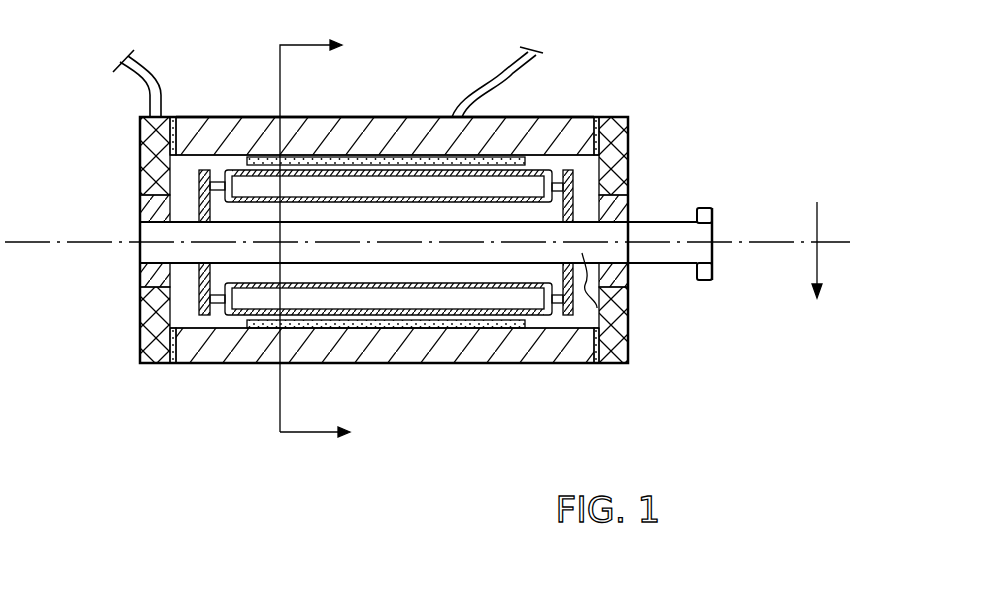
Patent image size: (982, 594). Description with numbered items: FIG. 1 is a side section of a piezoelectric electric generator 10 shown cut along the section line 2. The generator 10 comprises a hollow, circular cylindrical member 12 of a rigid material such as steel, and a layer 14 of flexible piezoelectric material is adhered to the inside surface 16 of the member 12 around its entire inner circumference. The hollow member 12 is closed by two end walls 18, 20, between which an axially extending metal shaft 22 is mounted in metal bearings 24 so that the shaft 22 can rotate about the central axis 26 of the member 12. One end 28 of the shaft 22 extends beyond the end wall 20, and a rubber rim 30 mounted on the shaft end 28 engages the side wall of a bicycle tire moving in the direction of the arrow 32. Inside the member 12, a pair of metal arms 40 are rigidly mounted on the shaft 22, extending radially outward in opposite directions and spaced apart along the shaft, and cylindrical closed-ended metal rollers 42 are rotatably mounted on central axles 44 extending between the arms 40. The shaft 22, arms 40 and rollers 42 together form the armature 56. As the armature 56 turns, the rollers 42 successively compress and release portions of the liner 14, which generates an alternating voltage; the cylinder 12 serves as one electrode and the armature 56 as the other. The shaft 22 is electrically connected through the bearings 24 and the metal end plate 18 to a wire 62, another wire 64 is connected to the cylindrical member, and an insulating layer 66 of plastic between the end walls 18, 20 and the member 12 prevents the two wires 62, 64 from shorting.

The section line 2- 2 is at (324, 238).
The piezoelectric electric generator 10 is at (648, 111).
The hollow circular cylindrical member 12 is at (308, 118).
The layer of flexible piezoelectric material 14 is at (376, 117).
The inside surface 16 is at (238, 162).
The end wall 18 is at (142, 178).
The end wall 20 is at (630, 150).
The shaft 22 is at (677, 248).
The metal bearings 24 is at (145, 208).
The central axis 26 is at (820, 241).
The shaft end 28 is at (715, 230).
The rubber rim 30 is at (706, 210).
The arrow 32 is at (818, 262).
The metal arms 40 is at (567, 168).
The cylindrical rollers 42 is at (512, 117).
The central axle 44 is at (212, 172).
The armature 56 is at (630, 333).
The wire 62 is at (149, 72).
The wire 64 is at (527, 53).
The layer of plastic 66 is at (145, 142).